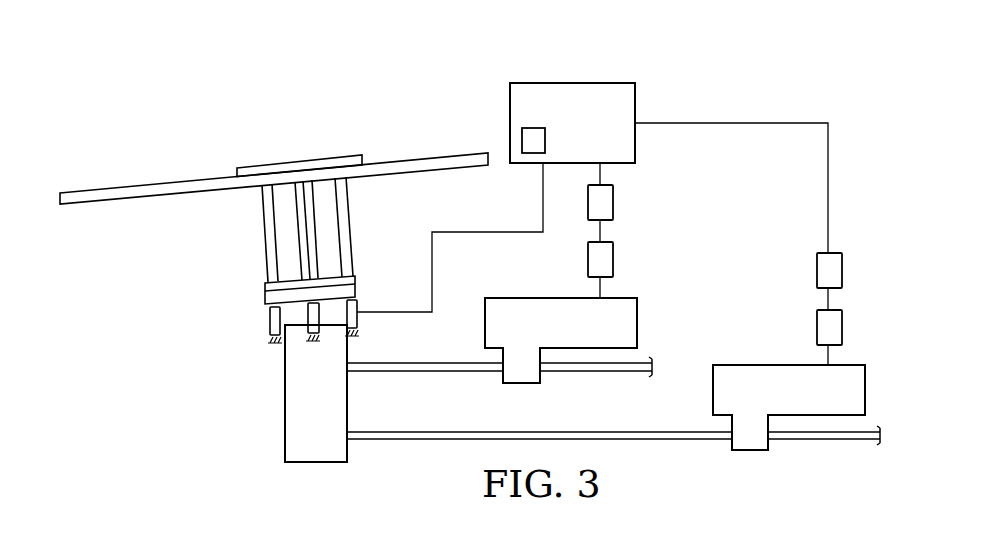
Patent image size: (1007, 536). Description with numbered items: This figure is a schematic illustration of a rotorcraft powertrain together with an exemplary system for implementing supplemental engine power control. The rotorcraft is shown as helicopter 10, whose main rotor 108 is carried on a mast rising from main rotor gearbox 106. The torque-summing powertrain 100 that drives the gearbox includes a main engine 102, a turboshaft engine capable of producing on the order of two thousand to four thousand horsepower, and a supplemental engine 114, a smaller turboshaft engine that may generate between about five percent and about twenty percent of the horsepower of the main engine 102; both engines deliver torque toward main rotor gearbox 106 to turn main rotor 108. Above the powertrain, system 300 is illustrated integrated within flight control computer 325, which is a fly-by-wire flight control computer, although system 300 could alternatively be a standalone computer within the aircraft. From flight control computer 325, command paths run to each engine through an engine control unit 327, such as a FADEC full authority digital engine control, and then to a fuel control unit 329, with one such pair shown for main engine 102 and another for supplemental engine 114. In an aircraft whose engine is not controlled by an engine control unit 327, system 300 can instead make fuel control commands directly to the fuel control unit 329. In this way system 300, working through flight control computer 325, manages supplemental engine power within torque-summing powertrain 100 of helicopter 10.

The helicopter 10 is at (142, 141).
The main rotor 108 is at (240, 145).
The main rotor gearbox 106 is at (283, 403).
The flight control computer 325 is at (582, 75).
The system 300 is at (547, 138).
The torque-summing powertrain 100 is at (743, 85).
The engine control unit 327 is at (614, 202).
The fuel control unit 329 is at (614, 258).
The main engine 102 is at (543, 298).
The supplemental engine 114 is at (770, 365).